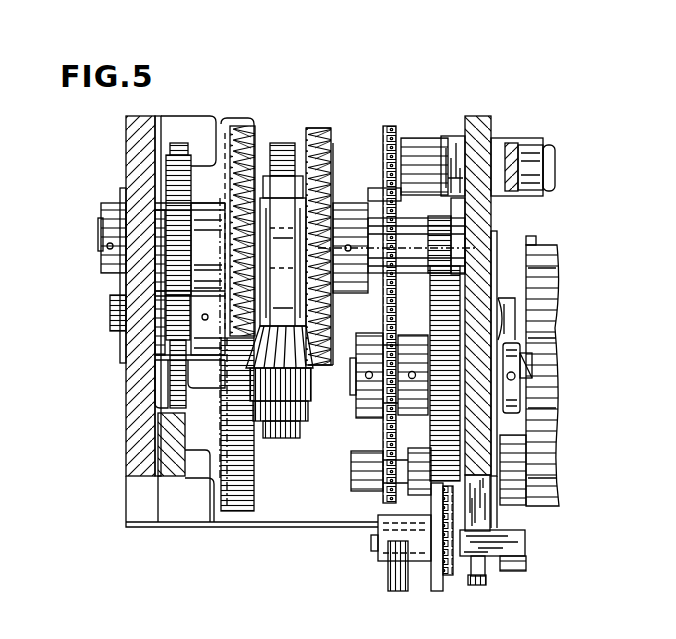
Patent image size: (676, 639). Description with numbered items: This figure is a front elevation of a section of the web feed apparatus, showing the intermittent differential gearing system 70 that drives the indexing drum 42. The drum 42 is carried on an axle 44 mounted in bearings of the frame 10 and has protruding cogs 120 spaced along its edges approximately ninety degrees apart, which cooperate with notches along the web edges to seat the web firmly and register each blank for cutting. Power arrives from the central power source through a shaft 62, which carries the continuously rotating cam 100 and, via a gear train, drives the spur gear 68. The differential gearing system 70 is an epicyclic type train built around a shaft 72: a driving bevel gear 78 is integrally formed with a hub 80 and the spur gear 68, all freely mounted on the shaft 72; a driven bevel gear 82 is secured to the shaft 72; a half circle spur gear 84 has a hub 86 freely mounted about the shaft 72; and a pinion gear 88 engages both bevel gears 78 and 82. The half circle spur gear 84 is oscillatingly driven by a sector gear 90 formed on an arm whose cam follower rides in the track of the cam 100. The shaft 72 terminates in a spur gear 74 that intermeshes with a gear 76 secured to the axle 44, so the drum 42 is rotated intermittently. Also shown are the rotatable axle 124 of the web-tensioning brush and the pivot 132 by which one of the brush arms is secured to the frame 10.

The frame 10 is at (121, 120).
The indexing drum 42 is at (540, 384).
The axle 44 is at (500, 335).
The shaft 62 is at (102, 320).
The spur gear 68 is at (185, 150).
The intermittent differential gearing system 70 is at (86, 388).
The shaft 72 is at (367, 255).
The spur gear 74 is at (424, 210).
The gear 76 is at (430, 290).
The driving bevel gear 78 is at (240, 150).
The hub 80 is at (202, 203).
The driven bevel gear 82 is at (322, 142).
The half circle spur gear 84 is at (273, 168).
The hub 86 is at (289, 186).
The pinion gear 88 is at (300, 370).
The sector gear 90 is at (300, 150).
The cam 100 is at (226, 502).
The cogs 120 is at (525, 230).
The rotatable axle 124 is at (374, 160).
The pivot 132 is at (446, 130).